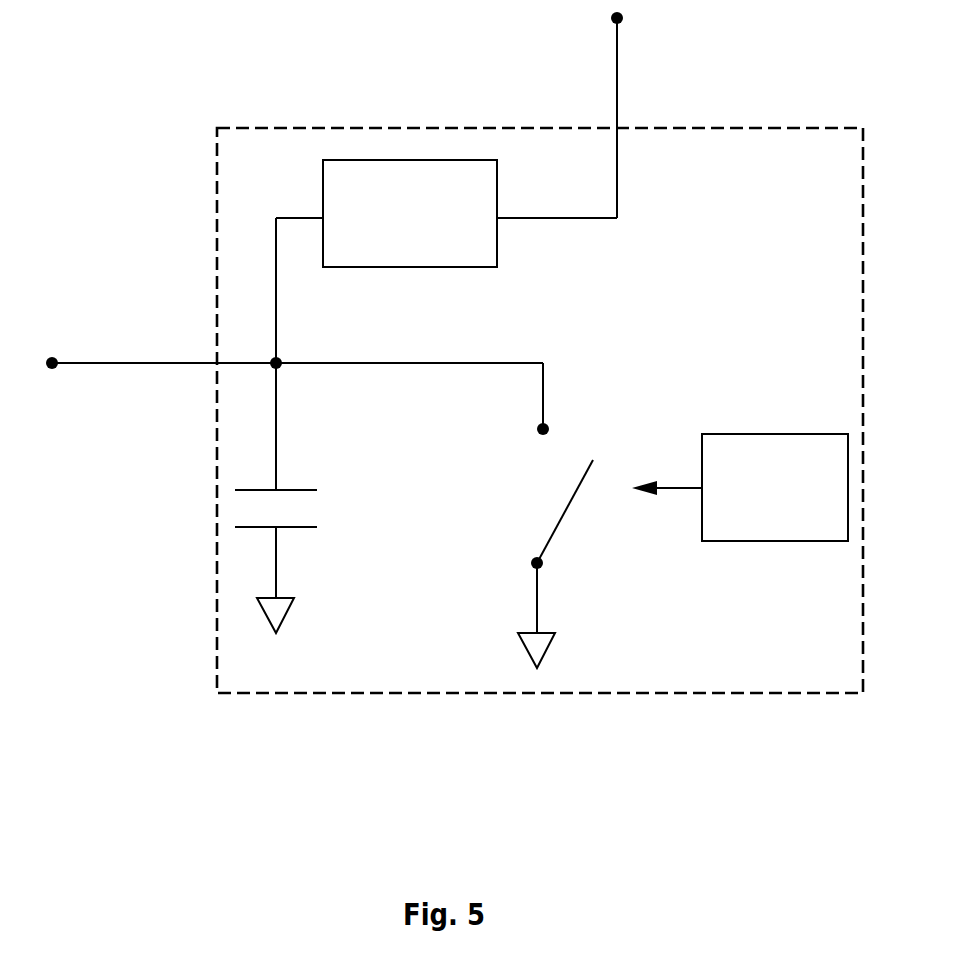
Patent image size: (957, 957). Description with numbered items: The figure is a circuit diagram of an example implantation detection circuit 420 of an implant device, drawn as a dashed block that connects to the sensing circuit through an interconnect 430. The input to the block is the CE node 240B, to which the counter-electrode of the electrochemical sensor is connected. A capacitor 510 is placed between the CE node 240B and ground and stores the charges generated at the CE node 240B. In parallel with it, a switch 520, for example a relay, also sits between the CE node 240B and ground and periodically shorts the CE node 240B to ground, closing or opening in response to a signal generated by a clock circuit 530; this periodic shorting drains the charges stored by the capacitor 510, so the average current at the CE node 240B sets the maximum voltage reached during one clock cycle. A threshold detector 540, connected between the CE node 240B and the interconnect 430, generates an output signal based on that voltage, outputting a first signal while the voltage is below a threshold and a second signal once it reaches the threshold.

The implantation detection circuit 420 is at (263, 96).
The interconnect 430 is at (620, 68).
The threshold detector 540 is at (446, 261).
The CE node 240B is at (108, 362).
The capacitor 510 is at (332, 510).
The switch 520 is at (535, 483).
The clock circuit 530 is at (740, 487).